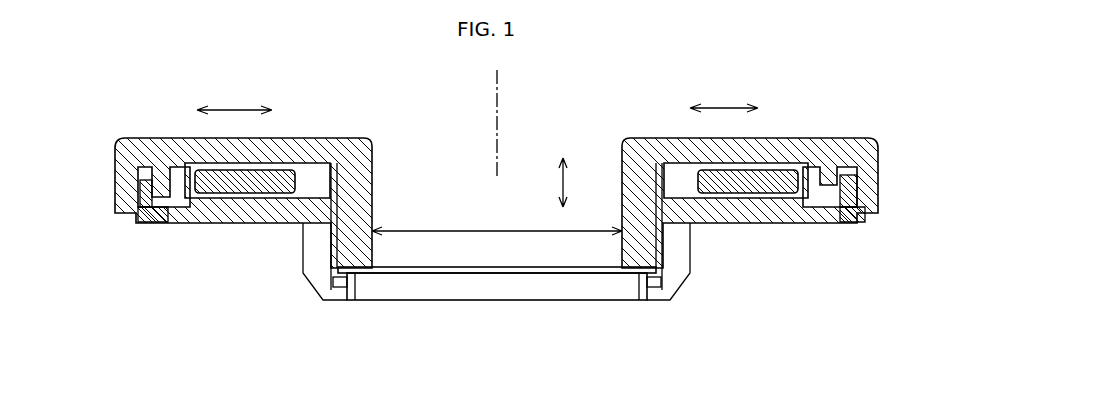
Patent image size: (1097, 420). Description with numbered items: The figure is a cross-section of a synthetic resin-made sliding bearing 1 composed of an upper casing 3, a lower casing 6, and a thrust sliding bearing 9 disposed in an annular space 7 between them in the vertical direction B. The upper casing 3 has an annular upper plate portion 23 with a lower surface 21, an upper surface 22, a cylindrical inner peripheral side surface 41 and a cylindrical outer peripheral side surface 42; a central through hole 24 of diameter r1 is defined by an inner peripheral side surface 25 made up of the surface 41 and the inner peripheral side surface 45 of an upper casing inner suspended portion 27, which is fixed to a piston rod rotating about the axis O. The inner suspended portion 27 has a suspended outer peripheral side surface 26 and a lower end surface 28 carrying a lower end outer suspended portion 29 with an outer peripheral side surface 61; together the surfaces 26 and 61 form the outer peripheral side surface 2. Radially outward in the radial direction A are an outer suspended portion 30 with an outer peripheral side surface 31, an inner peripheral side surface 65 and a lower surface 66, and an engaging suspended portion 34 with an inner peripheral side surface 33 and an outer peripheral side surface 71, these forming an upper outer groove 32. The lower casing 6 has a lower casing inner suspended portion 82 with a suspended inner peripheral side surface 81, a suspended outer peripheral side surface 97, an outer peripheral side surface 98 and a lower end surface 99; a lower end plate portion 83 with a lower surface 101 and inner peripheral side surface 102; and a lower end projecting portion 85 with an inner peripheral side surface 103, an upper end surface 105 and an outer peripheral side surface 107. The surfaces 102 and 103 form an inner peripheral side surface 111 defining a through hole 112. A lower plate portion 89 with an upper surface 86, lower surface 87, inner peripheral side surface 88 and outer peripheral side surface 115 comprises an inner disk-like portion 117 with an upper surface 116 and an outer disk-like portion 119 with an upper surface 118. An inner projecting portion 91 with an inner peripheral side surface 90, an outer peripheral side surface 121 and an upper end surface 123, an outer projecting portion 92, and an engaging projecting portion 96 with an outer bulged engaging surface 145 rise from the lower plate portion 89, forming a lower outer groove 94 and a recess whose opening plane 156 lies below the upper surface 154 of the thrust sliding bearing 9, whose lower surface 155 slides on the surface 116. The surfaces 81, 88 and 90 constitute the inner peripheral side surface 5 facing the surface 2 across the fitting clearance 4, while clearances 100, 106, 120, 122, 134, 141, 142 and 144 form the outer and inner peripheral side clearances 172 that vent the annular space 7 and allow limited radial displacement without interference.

The synthetic resin-made sliding bearing 1 is at (124, 269).
The outer peripheral side surface 2 is at (322, 255).
The upper casing 3 is at (787, 129).
The fitting clearance 4 is at (647, 138).
The inner peripheral side surface 5 is at (367, 138).
The lower casing 6 is at (694, 285).
The annular space 7 is at (240, 230).
The thrust sliding bearing 9 is at (772, 194).
The lower surface 21 is at (185, 138).
The upper surface 22 is at (765, 138).
The upper plate portion 23 is at (260, 138).
The through hole 24 is at (445, 175).
The inner peripheral side surface 25 is at (415, 274).
The suspended outer peripheral side surface 26 is at (668, 240).
The upper casing inner suspended portion 27 is at (590, 175).
The lower end surface 28 is at (436, 301).
The lower end outer suspended portion 29 is at (340, 289).
The outer suspended portion 30 is at (831, 222).
The outer peripheral side surface 31 is at (140, 134).
The upper outer groove 32 is at (123, 138).
The inner peripheral side surface 33 is at (140, 223).
The engaging suspended portion 34 is at (878, 205).
The inner peripheral side surface 41 is at (376, 163).
The outer peripheral side surface 42 is at (883, 140).
The inner peripheral side surface 45 is at (567, 138).
The outer peripheral side surface 61 is at (328, 292).
The inner peripheral side surface 65 is at (808, 138).
The lower surface 66 is at (815, 225).
The outer peripheral side surface 71 is at (117, 180).
The suspended inner peripheral side surface 81 is at (560, 297).
The lower casing inner suspended portion 82 is at (302, 262).
The lower end plate portion 83 is at (346, 301).
The lower end projecting portion 85 is at (452, 290).
The upper surface 86 is at (237, 198).
The lower surface 87 is at (749, 225).
The inner peripheral side surface 88 is at (374, 212).
The lower plate portion 89 is at (190, 222).
The inner peripheral side surface 90 is at (355, 138).
The inner projecting portion 91 is at (331, 138).
The outer projecting portion 92 is at (162, 138).
The lower outer groove 94 is at (177, 207).
The engaging projecting portion 96 is at (165, 222).
The suspended outer peripheral side surface 97 is at (318, 246).
The outer peripheral side surface 98 is at (320, 278).
The lower end surface 99 is at (335, 288).
The clearance 100 is at (662, 296).
The lower surface 101 is at (650, 301).
The inner peripheral side surface 102 is at (636, 280).
The inner peripheral side surface 103 is at (590, 290).
The upper end surface 105 is at (527, 274).
The lower end outer clearance 106 is at (657, 300).
The outer peripheral side surface 107 is at (380, 280).
The inner peripheral side surface 111 is at (537, 286).
The through hole 112 is at (470, 286).
The outer peripheral side surface 115 is at (866, 222).
The upper surface 116 is at (745, 225).
The inner disk-like portion 117 is at (766, 225).
The upper surface 118 is at (838, 222).
The outer disk-like portion 119 is at (172, 222).
The clearance 120 is at (852, 222).
The outer peripheral side surface 121 is at (293, 138).
The clearance 122 is at (668, 138).
The upper end surface 123 is at (643, 138).
The clearance 134 is at (800, 138).
The clearance 141 is at (823, 138).
The clearance 142 is at (852, 138).
The clearance 144 is at (867, 139).
The outer bulged engaging surface 145 is at (866, 216).
The upper surface 154 is at (762, 138).
The lower surface 155 is at (253, 194).
The opening plane 156 is at (683, 222).
The inner peripheral side clearance 172 is at (666, 294).
The radial direction A is at (724, 108).
The vertical direction B is at (560, 183).
The axis O is at (497, 90).
The diameter r1 is at (442, 231).